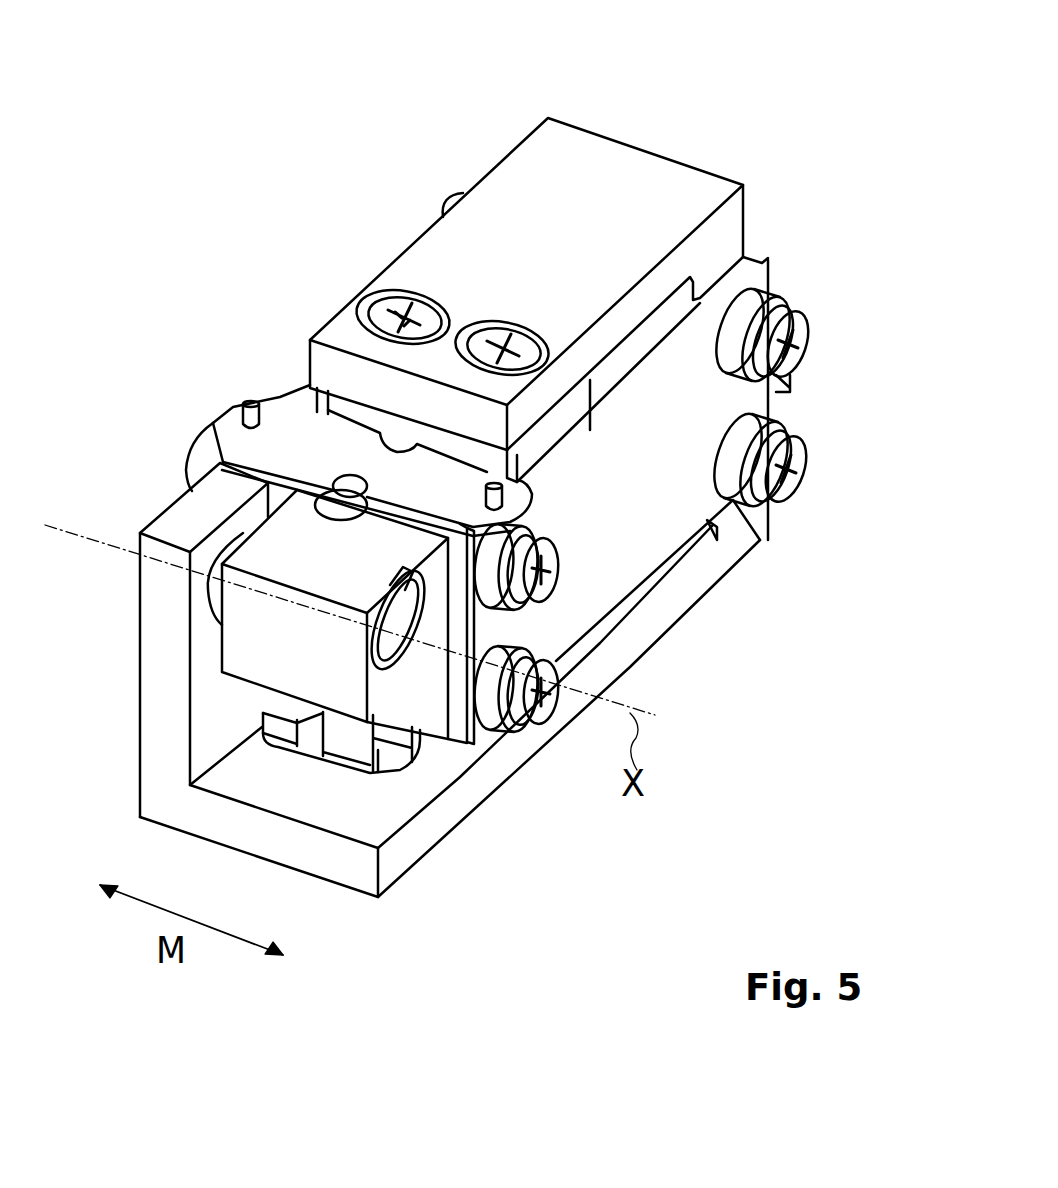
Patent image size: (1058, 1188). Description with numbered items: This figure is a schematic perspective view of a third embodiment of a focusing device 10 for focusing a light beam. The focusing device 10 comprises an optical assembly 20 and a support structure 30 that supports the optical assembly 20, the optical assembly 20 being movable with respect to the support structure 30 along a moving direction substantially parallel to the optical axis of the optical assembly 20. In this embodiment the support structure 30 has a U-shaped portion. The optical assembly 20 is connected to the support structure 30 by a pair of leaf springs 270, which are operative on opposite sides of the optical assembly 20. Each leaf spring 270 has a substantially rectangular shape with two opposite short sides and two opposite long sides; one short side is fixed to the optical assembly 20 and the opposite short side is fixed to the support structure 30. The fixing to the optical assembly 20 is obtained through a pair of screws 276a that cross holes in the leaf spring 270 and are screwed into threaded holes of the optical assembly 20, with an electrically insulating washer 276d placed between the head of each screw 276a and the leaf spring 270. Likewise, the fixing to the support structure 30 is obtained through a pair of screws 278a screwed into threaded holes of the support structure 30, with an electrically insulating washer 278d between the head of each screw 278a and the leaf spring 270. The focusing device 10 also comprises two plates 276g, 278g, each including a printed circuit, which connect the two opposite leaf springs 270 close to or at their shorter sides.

The focusing device 10 is at (271, 169).
The optical assembly 20 is at (262, 664).
The support structure 30 is at (656, 628).
The leaf spring 270 is at (622, 516).
The screw 276a is at (553, 582).
The washer 276d is at (485, 585).
The plate 276g is at (335, 450).
The screw 278a is at (813, 318).
The washer 278d is at (748, 290).
The plate 278g is at (786, 388).